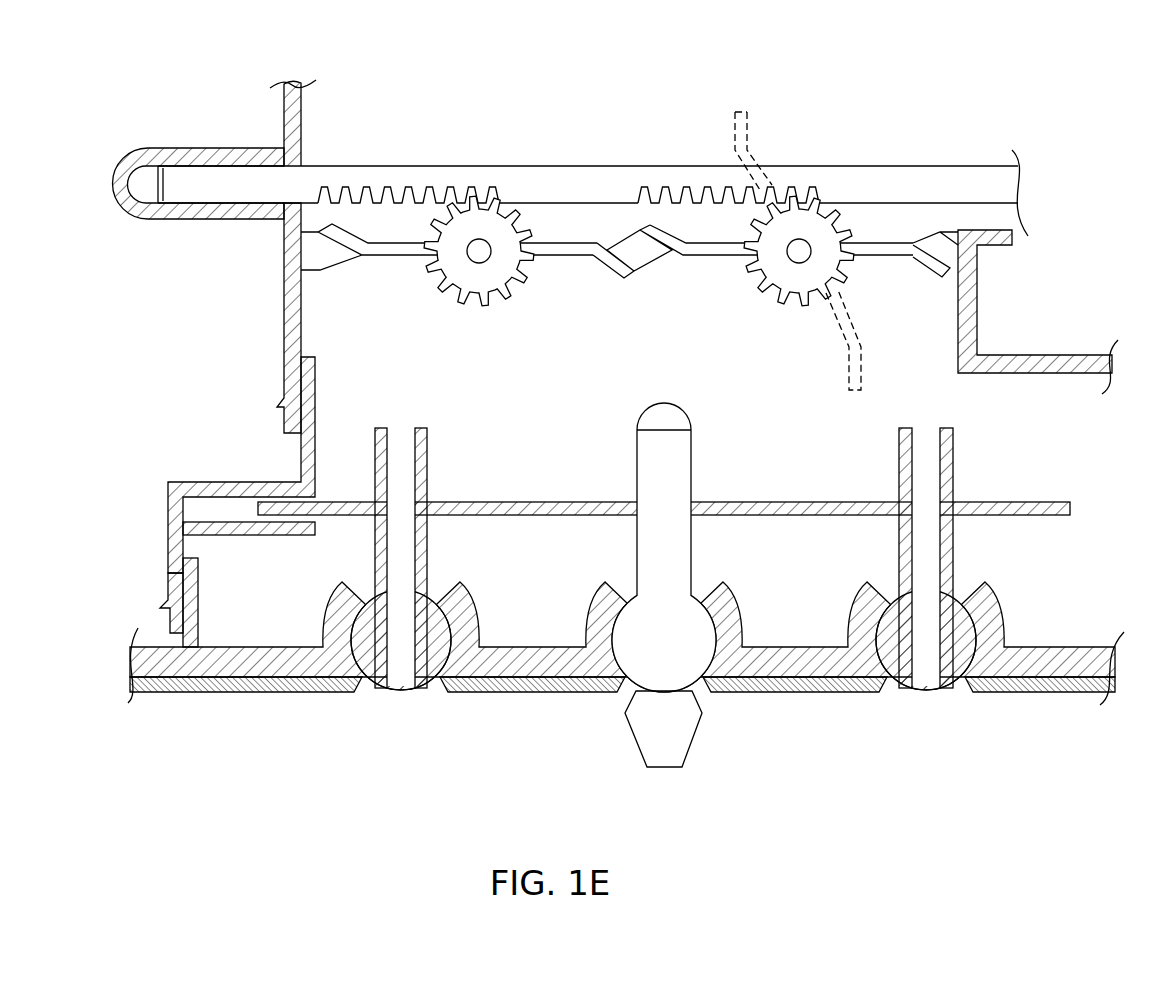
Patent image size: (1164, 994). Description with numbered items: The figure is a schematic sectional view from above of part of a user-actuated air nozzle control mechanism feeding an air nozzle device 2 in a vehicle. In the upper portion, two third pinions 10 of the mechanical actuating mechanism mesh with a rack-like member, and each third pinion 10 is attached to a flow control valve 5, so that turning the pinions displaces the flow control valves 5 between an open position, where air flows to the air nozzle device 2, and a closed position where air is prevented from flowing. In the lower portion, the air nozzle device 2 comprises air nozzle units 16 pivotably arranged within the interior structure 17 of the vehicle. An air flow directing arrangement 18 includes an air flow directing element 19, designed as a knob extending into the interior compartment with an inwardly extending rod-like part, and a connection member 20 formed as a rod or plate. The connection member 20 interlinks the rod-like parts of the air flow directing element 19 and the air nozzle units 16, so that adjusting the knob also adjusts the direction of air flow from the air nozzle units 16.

The air nozzle device 2 is at (626, 580).
The flow control valve 5 is at (410, 256).
The third pinion 10 is at (466, 276).
The air nozzle unit 16 is at (380, 692).
The interior structure 17 is at (258, 692).
The air flow directing arrangement 18 is at (836, 442).
The air flow directing element 19 is at (665, 728).
The connection member 20 is at (339, 502).